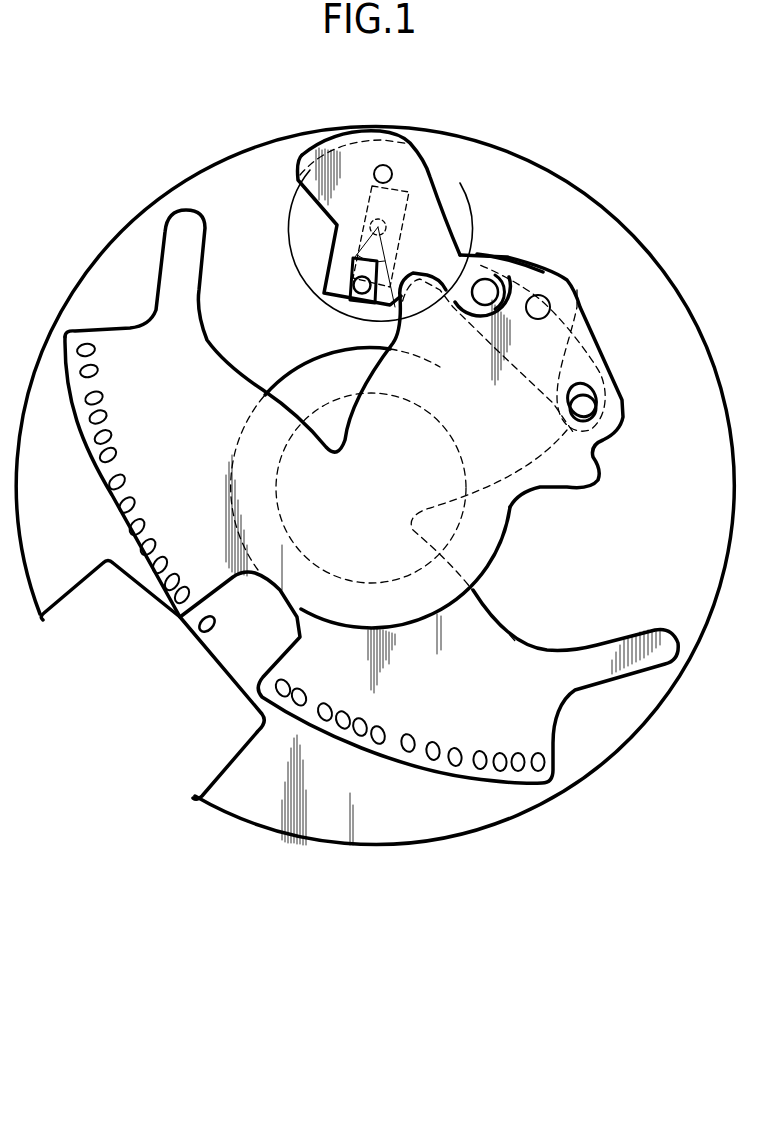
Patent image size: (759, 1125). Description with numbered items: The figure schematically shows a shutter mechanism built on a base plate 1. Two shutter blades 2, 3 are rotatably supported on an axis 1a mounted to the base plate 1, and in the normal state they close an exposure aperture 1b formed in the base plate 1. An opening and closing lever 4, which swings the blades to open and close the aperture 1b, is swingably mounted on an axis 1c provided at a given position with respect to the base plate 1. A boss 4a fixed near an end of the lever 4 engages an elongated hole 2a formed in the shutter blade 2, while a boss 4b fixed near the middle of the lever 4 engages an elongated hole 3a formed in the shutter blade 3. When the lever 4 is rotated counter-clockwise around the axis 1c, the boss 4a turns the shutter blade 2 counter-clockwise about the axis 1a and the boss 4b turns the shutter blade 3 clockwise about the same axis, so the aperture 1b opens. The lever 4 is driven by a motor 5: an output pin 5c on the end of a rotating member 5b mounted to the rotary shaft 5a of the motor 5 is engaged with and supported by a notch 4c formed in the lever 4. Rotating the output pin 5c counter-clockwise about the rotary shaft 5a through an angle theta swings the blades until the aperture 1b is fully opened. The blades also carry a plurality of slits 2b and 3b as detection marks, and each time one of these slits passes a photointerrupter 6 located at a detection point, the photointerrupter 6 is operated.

The base plate 1 is at (418, 830).
The axis 1a is at (545, 307).
The aperture 1b is at (423, 410).
The axis 1c is at (384, 165).
The shutter blade 2 is at (222, 388).
The elongated hole 2a is at (585, 390).
The slits 2b is at (95, 340).
The shutter blade 3 is at (520, 657).
The elongated hole 3a is at (510, 290).
The slits 3b is at (548, 752).
The opening and closing lever 4 is at (455, 237).
The boss 4a is at (586, 412).
The boss 4b is at (487, 290).
The notch 4c is at (352, 262).
The motor 5 is at (292, 223).
The rotary shaft 5a is at (378, 227).
The rotating member 5b is at (356, 200).
The output pin 5c is at (357, 297).
The photointerrupter 6 is at (208, 630).